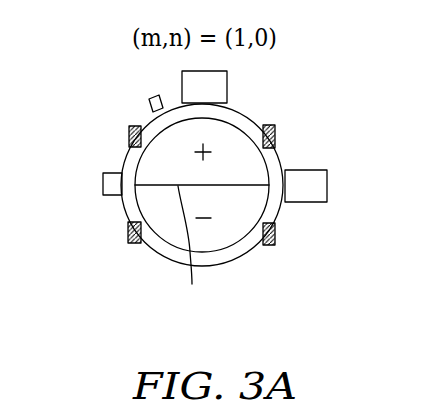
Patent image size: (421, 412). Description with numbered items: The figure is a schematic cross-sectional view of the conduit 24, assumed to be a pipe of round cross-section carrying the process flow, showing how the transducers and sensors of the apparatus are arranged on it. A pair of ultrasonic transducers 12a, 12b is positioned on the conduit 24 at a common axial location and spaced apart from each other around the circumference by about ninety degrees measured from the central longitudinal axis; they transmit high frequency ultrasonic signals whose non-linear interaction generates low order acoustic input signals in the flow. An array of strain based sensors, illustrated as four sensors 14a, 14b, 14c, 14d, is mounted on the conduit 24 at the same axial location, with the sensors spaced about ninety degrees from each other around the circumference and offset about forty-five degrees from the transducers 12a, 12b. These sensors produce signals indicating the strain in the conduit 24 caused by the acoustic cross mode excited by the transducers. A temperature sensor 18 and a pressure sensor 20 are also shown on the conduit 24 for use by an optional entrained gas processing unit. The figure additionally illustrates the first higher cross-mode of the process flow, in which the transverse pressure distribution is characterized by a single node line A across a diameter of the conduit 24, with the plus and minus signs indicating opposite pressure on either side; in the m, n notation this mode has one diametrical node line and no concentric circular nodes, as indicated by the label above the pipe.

The conduit 24 is at (250, 117).
The node line A is at (188, 252).
The ultrasonic transducer 12a is at (182, 76).
The ultrasonic transducer 12b is at (317, 168).
The pressure sensor 20 is at (102, 188).
The temperature sensor 18 is at (150, 99).
The sensor 14a is at (129, 127).
The sensor 14b is at (134, 243).
The sensor 14c is at (275, 237).
The sensor 14d is at (275, 136).